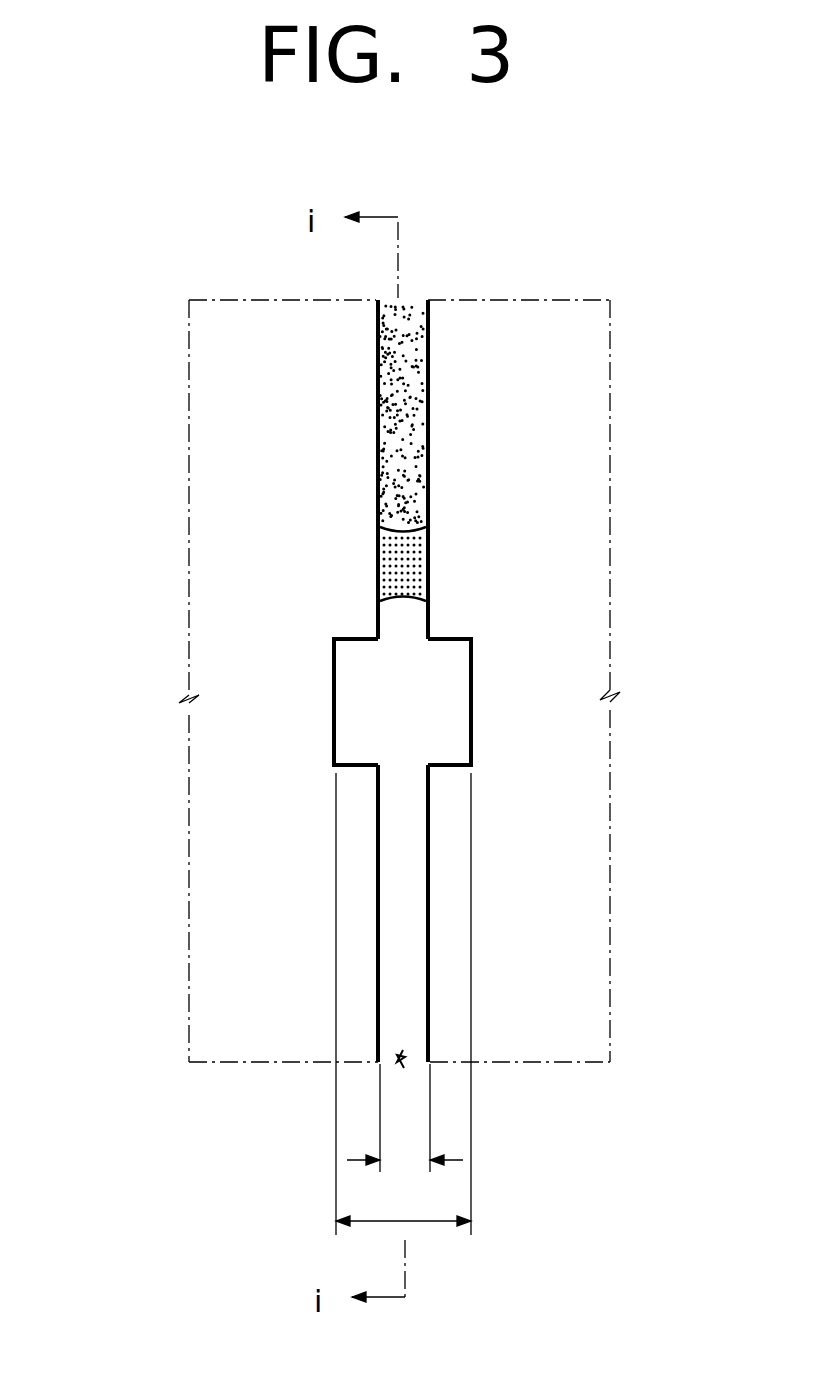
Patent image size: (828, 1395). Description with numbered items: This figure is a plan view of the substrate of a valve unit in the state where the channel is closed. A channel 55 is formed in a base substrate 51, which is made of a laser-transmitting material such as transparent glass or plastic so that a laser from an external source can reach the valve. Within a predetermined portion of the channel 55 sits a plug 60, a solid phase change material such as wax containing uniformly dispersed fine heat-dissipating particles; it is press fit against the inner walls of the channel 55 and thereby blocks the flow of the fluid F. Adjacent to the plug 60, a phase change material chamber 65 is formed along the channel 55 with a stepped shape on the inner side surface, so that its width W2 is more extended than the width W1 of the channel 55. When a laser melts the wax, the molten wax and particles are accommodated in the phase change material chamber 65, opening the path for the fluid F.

The base substrate 51 is at (227, 935).
The channel 55 is at (370, 847).
The plug 60 is at (376, 560).
The phase change material chamber 65 is at (327, 673).
The fluid F is at (376, 443).
The width of the channel W1 is at (405, 1145).
The width of the phase change material chamber W2 is at (403, 1205).